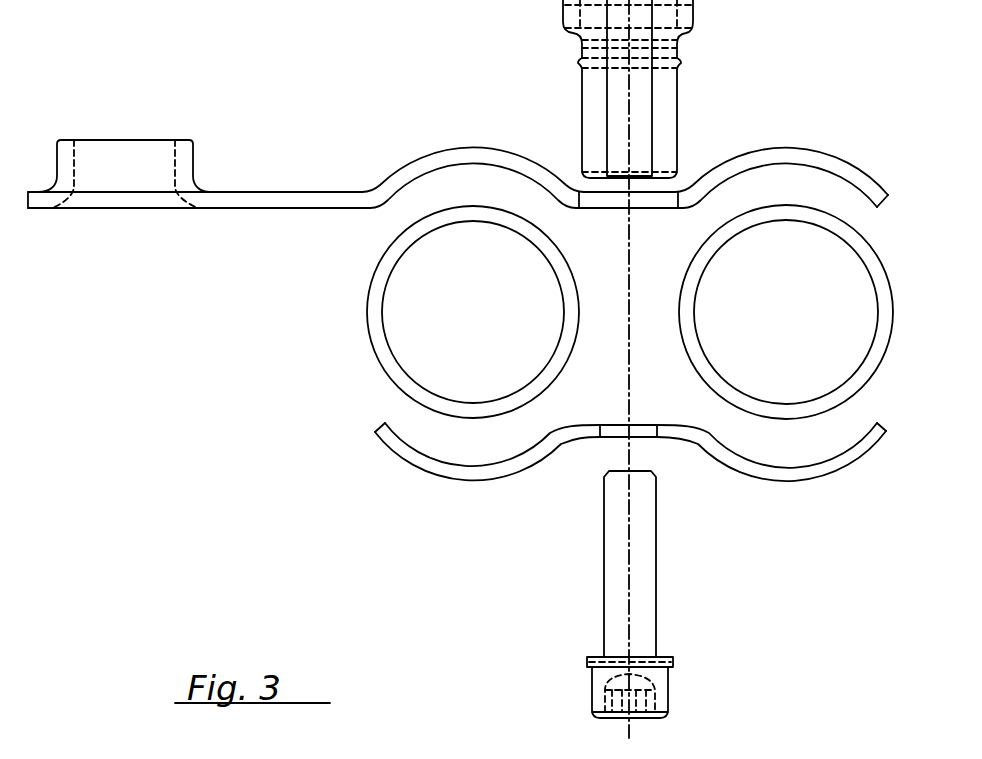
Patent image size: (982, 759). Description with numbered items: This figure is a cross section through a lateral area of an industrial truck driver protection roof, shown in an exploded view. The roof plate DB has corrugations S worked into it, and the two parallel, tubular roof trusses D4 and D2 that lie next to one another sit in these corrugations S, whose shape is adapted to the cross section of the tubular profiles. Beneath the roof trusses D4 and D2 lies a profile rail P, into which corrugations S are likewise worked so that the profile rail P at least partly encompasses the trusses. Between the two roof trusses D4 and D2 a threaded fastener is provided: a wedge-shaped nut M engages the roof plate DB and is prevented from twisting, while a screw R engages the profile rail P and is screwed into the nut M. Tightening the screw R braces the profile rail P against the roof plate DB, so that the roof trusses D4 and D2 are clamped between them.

The roof plate DB is at (250, 197).
The corrugations S is at (465, 152).
The profile rail P is at (680, 433).
The roof truss D4 is at (378, 313).
The roof truss D2 is at (888, 330).
The wedge-shaped nut M is at (663, 95).
The screw R is at (615, 556).